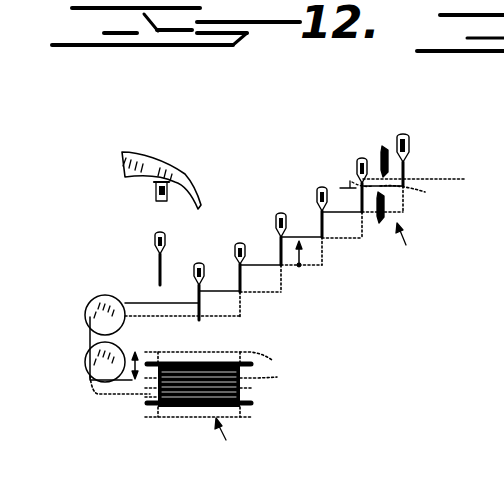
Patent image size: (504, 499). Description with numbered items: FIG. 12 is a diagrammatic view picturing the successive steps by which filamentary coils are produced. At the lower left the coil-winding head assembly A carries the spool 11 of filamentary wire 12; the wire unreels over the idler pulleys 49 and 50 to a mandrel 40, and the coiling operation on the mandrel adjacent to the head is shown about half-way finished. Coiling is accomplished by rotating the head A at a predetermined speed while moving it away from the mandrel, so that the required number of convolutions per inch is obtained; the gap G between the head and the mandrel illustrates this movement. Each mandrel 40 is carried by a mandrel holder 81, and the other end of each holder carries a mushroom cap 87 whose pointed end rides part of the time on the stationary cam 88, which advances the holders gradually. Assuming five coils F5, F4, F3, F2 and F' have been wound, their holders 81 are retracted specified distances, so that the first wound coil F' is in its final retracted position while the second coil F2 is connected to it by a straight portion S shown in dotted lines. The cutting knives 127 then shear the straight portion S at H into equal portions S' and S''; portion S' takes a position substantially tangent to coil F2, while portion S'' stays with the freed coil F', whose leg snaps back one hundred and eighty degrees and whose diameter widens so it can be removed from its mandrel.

The stationary cam 88 is at (172, 168).
The mushroom cap 87 is at (152, 193).
The mandrel holder 81 is at (152, 206).
The mandrel 40 is at (157, 264).
The idler pulley 50 is at (90, 322).
The idler pulley 49 is at (108, 368).
The filamentary wire 12 is at (131, 388).
The spool 11 is at (253, 364).
The cutting knife 127 is at (405, 160).
The first wound coil F' is at (431, 173).
The second wound coil F2 is at (357, 168).
The third wound coil F3 is at (343, 240).
The fourth wound coil F4 is at (286, 255).
The fifth wound coil F5 is at (238, 268).
The gap G is at (300, 266).
The straight portion S is at (409, 194).
The sheared portion S' is at (423, 185).
The sheared portion S'' is at (352, 180).
The cutting point H is at (407, 243).
The coil-winding head assembly A is at (211, 409).